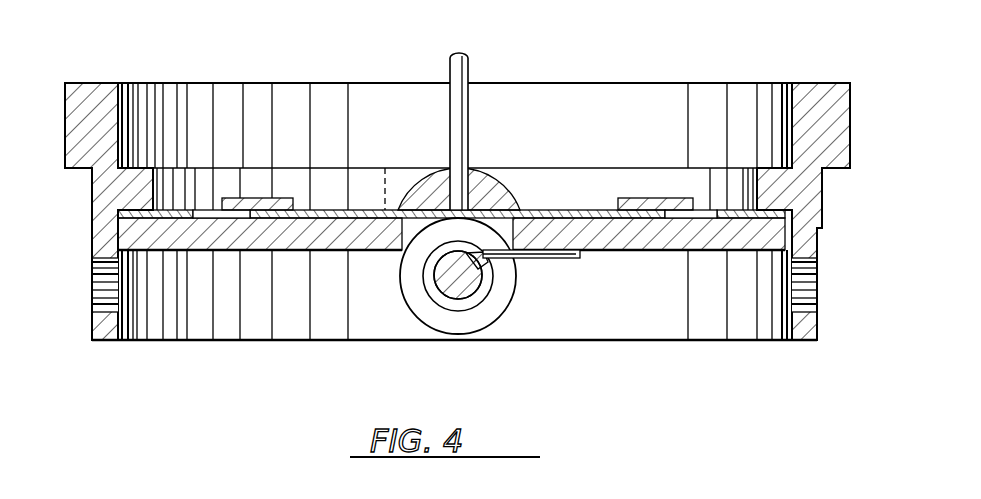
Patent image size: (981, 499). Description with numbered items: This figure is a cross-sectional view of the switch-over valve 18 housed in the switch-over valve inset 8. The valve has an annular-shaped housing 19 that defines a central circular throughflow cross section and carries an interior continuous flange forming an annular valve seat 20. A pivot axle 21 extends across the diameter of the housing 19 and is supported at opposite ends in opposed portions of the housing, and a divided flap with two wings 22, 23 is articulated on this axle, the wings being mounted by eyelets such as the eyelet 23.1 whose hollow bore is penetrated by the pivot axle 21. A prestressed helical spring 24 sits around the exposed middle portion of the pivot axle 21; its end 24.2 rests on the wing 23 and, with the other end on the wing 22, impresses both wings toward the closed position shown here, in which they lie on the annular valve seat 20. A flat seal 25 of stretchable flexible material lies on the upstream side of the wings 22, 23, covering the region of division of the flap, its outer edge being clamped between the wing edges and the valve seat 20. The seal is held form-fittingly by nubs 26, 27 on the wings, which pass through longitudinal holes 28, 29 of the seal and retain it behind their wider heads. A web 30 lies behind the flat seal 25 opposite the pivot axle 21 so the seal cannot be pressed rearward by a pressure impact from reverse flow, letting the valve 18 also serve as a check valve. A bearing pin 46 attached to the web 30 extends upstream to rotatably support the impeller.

The switch-over valve inset 8 is at (700, 44).
The switch-over valve 18 is at (405, 364).
The annular-shaped housing 19 is at (808, 188).
The annular valve seat 20 is at (130, 212).
The pivot axle 21 is at (472, 282).
The wing 22 is at (148, 238).
The wing 23 is at (640, 243).
The eyelet 23.1 is at (432, 310).
The prestressed helical spring 24 is at (462, 297).
The spring end 24.2 is at (530, 252).
The flat seal 25 is at (600, 210).
The nub 26 is at (262, 206).
The nub 27 is at (652, 198).
The longitudinal hole 28 is at (207, 213).
The longitudinal hole 29 is at (697, 213).
The web 30 is at (478, 182).
The bearing pin 46 is at (455, 75).